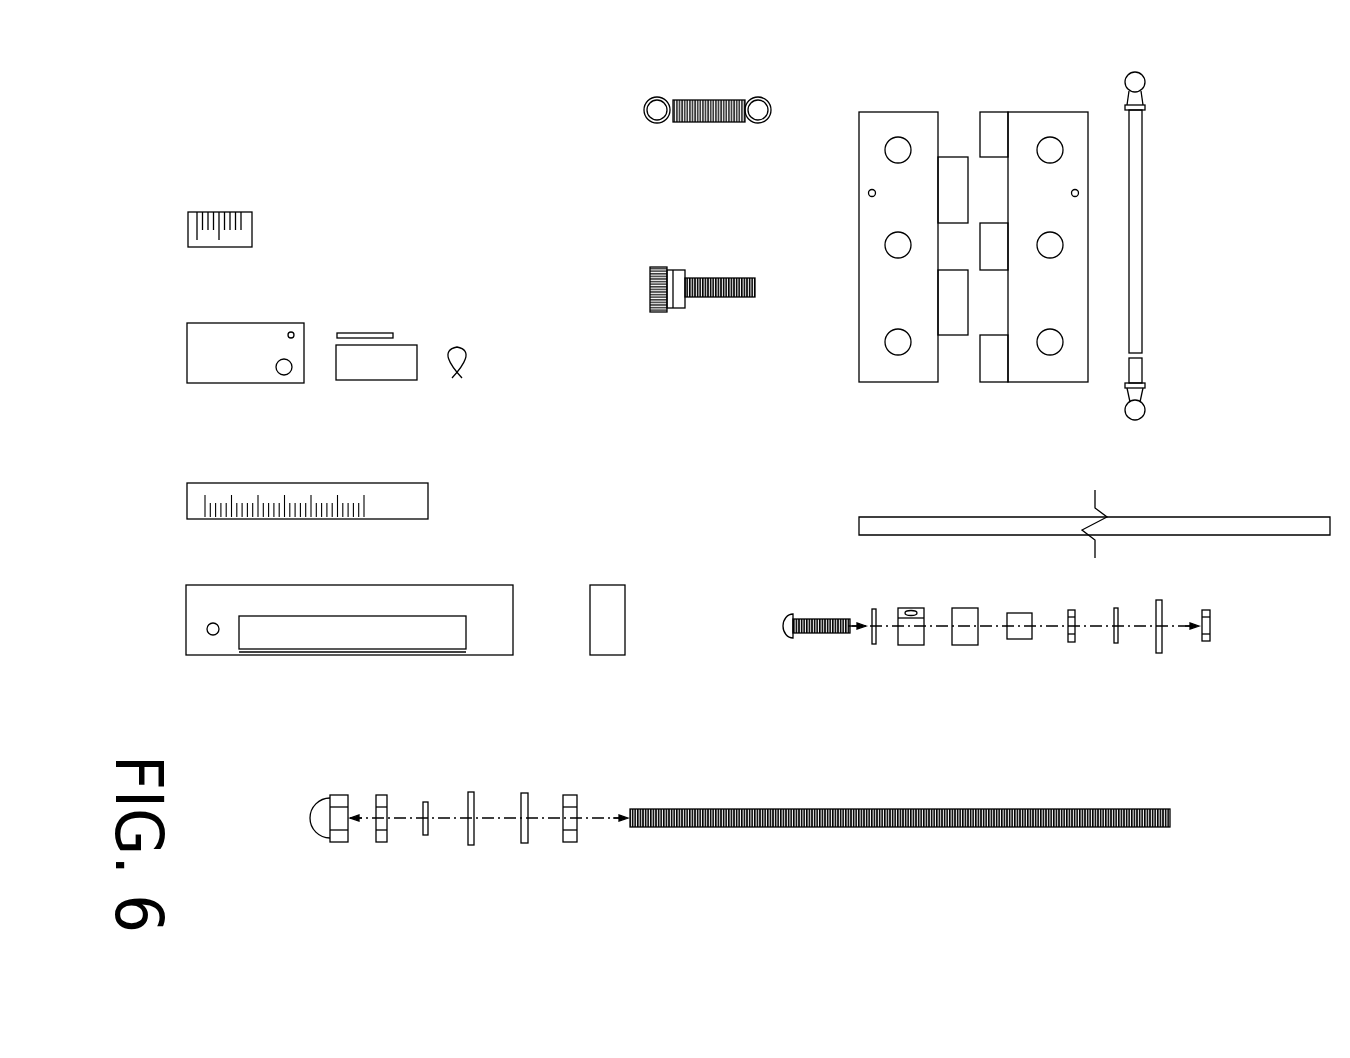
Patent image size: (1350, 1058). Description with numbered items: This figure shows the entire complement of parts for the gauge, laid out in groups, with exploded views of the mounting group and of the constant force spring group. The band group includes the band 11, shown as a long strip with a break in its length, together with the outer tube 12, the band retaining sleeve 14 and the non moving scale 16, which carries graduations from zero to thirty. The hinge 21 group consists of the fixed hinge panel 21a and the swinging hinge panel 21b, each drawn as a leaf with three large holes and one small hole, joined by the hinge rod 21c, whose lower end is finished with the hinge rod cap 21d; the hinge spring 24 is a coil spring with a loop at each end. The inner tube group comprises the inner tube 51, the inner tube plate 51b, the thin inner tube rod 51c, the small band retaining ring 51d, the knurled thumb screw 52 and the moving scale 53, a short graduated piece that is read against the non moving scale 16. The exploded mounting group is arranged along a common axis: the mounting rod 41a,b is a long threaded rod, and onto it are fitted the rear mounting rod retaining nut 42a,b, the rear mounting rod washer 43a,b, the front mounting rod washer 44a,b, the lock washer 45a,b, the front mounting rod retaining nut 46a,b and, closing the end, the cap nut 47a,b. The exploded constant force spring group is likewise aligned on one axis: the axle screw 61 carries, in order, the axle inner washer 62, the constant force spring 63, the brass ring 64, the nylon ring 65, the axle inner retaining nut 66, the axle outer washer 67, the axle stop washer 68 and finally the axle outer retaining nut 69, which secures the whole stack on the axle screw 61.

The band 11 is at (1094, 506).
The outer tube 12 is at (349, 602).
The band retaining sleeve 14 is at (606, 602).
The non moving scale 16 is at (307, 480).
The hinge 21 is at (986, 244).
The fixed hinge panel 21a is at (913, 270).
The swinging hinge panel 21b is at (1047, 270).
The hinge rod 21c is at (1146, 232).
The hinge rod cap 21d is at (1148, 370).
The hinge spring 24 is at (707, 86).
The mounting rod 41a,b is at (891, 850).
The rear mounting rod retaining nut 42a,b is at (607, 785).
The rear mounting rod washer 43a,b is at (563, 842).
The front mounting rod washer 44a,b is at (509, 786).
The lock washer 45a,b is at (465, 846).
The front mounting rod retaining nut 46a,b is at (419, 785).
The cap nut 47a,b is at (365, 843).
The inner tube 51 is at (245, 331).
The inner tube plate 51b is at (391, 387).
The inner tube rod 51c is at (390, 319).
The band retaining ring 51d is at (485, 388).
The thumb screw 52 is at (701, 269).
The moving scale 53 is at (220, 208).
The axle screw 61 is at (824, 662).
The axle inner washer 62 is at (893, 651).
The constant force spring 63 is at (930, 659).
The brass ring 64 is at (981, 650).
The nylon ring 65 is at (1035, 662).
The axle inner retaining nut 66 is at (1091, 651).
The axle outer washer 67 is at (1136, 659).
The axle stop washer 68 is at (1179, 646).
The axle outer retaining nut 69 is at (1216, 660).